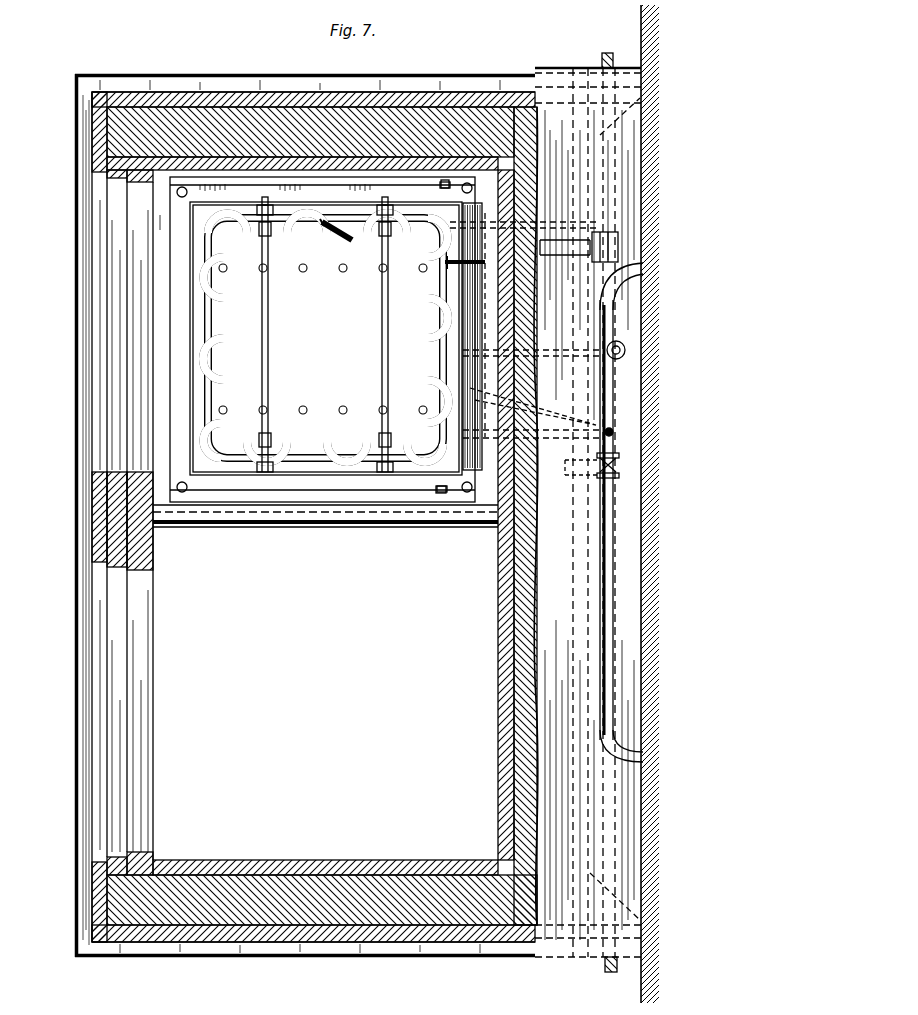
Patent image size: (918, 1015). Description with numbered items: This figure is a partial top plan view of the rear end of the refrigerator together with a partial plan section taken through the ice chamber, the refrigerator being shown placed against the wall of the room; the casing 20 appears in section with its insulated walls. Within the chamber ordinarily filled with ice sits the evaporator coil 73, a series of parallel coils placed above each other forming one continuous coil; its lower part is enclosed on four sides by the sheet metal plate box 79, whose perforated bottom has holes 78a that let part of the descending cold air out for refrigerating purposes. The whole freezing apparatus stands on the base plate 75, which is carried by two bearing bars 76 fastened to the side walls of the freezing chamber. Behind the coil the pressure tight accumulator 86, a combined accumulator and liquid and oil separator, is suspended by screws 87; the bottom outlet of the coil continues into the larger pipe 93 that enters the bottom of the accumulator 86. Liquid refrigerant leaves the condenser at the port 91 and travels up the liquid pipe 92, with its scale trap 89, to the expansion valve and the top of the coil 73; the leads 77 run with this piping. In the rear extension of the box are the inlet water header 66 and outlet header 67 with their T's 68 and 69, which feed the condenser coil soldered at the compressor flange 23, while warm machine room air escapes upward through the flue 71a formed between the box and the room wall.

The cabinet casing 20 is at (246, 74).
The compressor flange 23 is at (207, 268).
The inlet water header 66 is at (645, 170).
The outlet header 67 is at (612, 485).
The T 68 is at (622, 240).
The T 69 is at (618, 462).
The flue 71a is at (628, 578).
The evaporator coil 73 is at (240, 378).
The base plate 75 is at (237, 505).
The bearing bars 76 is at (186, 346).
The electrical leads 77 is at (520, 400).
The holes 78a is at (205, 288).
The sheet metal plate box 79 is at (190, 418).
The accumulator 86 is at (475, 318).
The screws 87 is at (445, 180).
The scale trap 89 is at (626, 350).
The port 91 is at (575, 475).
The liquid pipe 92 is at (485, 264).
The larger pipe 93 is at (420, 232).